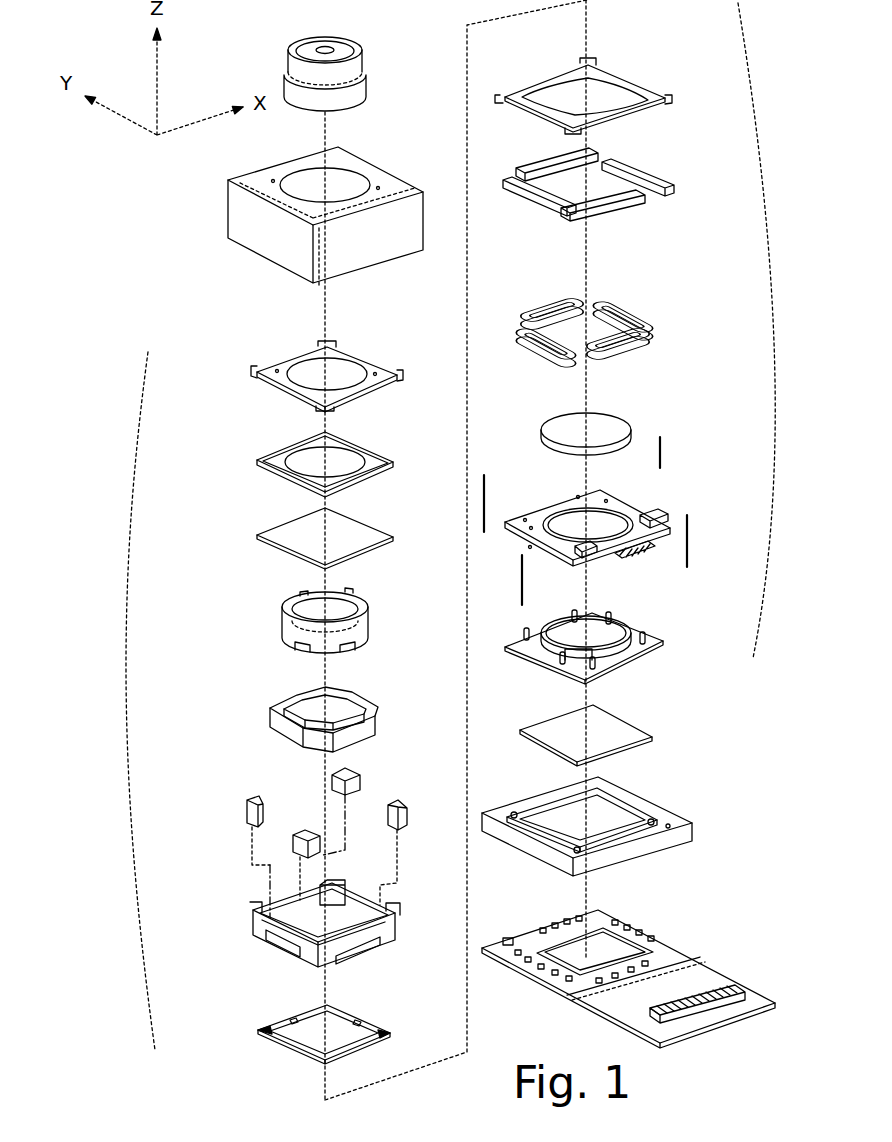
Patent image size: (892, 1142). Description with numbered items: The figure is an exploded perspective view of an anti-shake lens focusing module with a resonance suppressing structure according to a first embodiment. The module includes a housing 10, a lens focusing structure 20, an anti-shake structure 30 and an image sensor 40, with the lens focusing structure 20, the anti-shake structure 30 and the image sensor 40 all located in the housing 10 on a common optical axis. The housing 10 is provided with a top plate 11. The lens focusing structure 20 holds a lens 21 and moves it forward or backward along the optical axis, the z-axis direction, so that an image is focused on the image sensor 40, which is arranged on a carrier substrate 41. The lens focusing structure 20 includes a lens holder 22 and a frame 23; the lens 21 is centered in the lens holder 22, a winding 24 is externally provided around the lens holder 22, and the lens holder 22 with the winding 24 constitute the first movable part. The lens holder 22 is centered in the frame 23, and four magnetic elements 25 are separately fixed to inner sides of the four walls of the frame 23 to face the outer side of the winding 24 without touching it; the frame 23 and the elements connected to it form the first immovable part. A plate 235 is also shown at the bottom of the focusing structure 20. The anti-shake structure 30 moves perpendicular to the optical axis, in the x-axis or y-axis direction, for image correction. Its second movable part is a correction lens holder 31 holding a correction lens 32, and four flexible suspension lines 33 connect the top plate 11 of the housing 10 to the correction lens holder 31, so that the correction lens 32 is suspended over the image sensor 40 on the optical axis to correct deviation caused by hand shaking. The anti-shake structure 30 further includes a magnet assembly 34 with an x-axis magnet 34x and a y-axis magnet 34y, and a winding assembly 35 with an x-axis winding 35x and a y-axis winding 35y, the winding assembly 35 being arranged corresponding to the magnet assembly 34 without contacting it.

The housing 10 is at (238, 200).
The top plate 11 is at (373, 365).
The lens focusing structure 20 is at (129, 783).
The lens 21 is at (305, 45).
The lens holder 22 is at (285, 612).
The frame 23 is at (258, 933).
The lower spring plate 235 is at (270, 1025).
The winding 24 is at (278, 728).
The magnetic elements 25 is at (400, 802).
The anti-shake structure 30 is at (758, 140).
The correction lens holder 31 is at (580, 500).
The correction lens 32 is at (603, 423).
The suspension lines 33 is at (520, 585).
The magnet assembly 34 is at (700, 150).
The x-axis magnet 34x is at (520, 200).
The y-axis magnet 34y is at (625, 208).
The winding assembly 35 is at (708, 382).
The x-axis winding 35x is at (528, 350).
The y-axis winding 35y is at (632, 358).
The image sensor 40 is at (555, 925).
The carrier substrate 41 is at (640, 940).